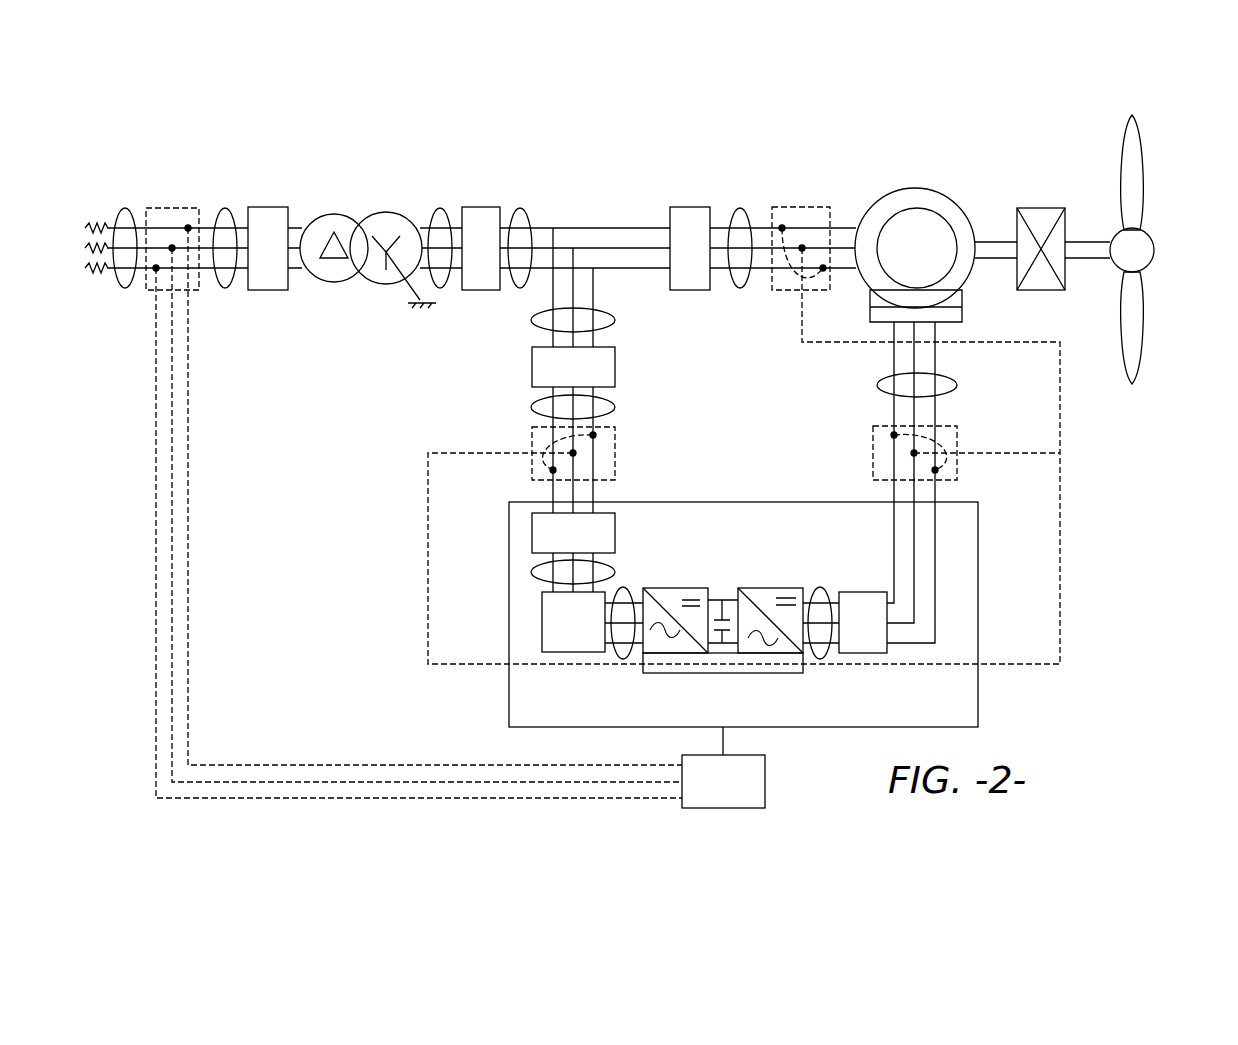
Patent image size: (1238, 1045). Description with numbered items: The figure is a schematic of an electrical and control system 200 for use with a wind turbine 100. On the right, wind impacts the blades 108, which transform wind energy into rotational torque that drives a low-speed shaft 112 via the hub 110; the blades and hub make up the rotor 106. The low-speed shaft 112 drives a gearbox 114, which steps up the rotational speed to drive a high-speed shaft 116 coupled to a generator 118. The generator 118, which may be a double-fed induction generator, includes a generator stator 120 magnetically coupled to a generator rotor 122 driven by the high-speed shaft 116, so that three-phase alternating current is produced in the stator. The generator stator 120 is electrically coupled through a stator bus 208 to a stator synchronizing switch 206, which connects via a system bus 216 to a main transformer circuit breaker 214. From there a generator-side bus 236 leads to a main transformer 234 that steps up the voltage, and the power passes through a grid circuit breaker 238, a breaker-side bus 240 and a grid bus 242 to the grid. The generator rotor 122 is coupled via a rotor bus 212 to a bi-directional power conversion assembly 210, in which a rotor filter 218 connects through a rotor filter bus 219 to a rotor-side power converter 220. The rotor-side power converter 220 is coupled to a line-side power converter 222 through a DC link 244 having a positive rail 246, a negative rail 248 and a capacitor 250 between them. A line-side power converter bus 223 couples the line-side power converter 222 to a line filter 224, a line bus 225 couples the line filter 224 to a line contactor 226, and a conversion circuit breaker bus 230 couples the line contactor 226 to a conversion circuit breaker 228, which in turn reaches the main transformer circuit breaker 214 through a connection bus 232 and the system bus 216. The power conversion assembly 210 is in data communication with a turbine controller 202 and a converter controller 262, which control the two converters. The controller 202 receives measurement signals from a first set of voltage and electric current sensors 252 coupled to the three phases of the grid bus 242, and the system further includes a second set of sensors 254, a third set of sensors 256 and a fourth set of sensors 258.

The wind turbine 100 is at (1097, 115).
The rotor 106 is at (1155, 218).
The blades 108 is at (1146, 170).
The hub 110 is at (1155, 245).
The low-speed shaft 112 is at (1078, 240).
The gearbox 114 is at (1045, 207).
The high-speed shaft 116 is at (1003, 240).
The generator 118 is at (910, 165).
The generator stator 120 is at (936, 190).
The generator rotor 122 is at (892, 228).
The electrical and control system 200 is at (328, 133).
The turbine controller 202 is at (744, 793).
The stator synchronizing switch 206 is at (688, 206).
The stator bus 208 is at (741, 206).
The power conversion assembly 210 is at (980, 590).
The rotor bus 212 is at (957, 385).
The main transformer circuit breaker 214 is at (480, 206).
The system bus 216 is at (522, 206).
The rotor filter 218 is at (855, 592).
The rotor filter bus 219 is at (820, 588).
The rotor-side power converter 220 is at (800, 650).
The line-side power converter 222 is at (642, 652).
The line-side power converter bus 223 is at (623, 588).
The line filter 224 is at (542, 632).
The line bus 225 is at (531, 580).
The line contactor 226 is at (532, 540).
The conversion circuit breaker 228 is at (615, 367).
The conversion circuit breaker bus 230 is at (615, 407).
The connection bus 232 is at (642, 308).
The main transformer 234 is at (378, 212).
The generator-side bus 236 is at (440, 206).
The grid circuit breaker 238 is at (276, 206).
The breaker-side bus 240 is at (226, 206).
The grid bus 242 is at (127, 206).
The DC link 244 is at (730, 555).
The positive rail 246 is at (738, 600).
The negative rail 248 is at (728, 655).
The capacitor 250 is at (718, 622).
The first set of voltage and electric current sensors 252 is at (178, 205).
The second set of voltage and electric current sensors 254 is at (799, 185).
The third set of voltage and electric current sensors 256 is at (872, 453).
The fourth set of voltage and electric current sensors 258 is at (685, 437).
The converter controller 262 is at (762, 674).